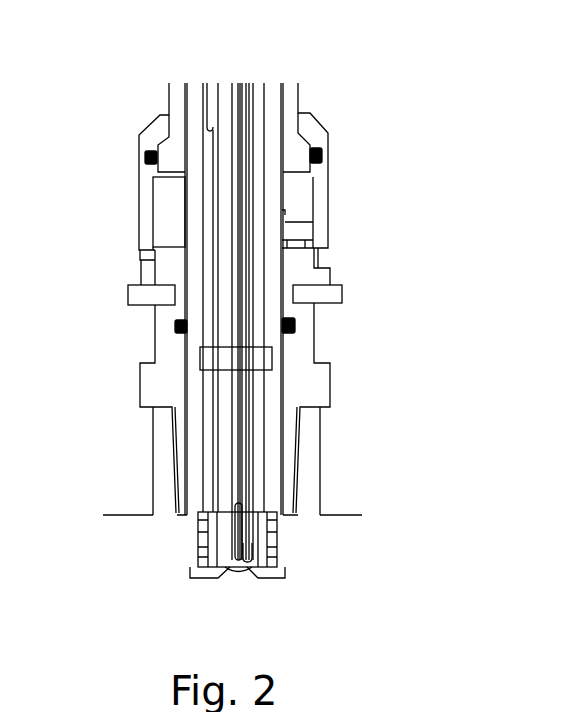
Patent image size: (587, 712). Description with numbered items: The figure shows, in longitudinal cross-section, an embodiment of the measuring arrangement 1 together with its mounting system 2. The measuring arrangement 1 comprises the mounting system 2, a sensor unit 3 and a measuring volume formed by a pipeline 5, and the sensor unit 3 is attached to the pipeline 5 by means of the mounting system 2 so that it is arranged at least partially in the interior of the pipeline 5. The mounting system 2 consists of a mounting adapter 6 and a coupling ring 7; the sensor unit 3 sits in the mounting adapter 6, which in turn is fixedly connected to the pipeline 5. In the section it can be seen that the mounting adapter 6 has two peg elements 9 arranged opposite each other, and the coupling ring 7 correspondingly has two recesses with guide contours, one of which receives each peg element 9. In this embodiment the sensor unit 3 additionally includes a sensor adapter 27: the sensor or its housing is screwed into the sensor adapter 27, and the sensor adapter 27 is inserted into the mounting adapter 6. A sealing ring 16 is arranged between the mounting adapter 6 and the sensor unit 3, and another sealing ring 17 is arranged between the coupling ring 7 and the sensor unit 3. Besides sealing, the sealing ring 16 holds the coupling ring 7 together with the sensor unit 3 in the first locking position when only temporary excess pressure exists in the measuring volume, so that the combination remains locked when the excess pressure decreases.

The measuring arrangement 1 is at (368, 85).
The mounting system 2 is at (366, 313).
The sensor unit 3 is at (203, 81).
The pipeline 5 is at (338, 527).
The mounting adapter 6 is at (318, 382).
The coupling ring 7 is at (328, 190).
The peg element 9 is at (147, 294).
The sealing ring 16 is at (176, 331).
The sealing ring 17 is at (146, 160).
The sensor adapter 27 is at (175, 142).